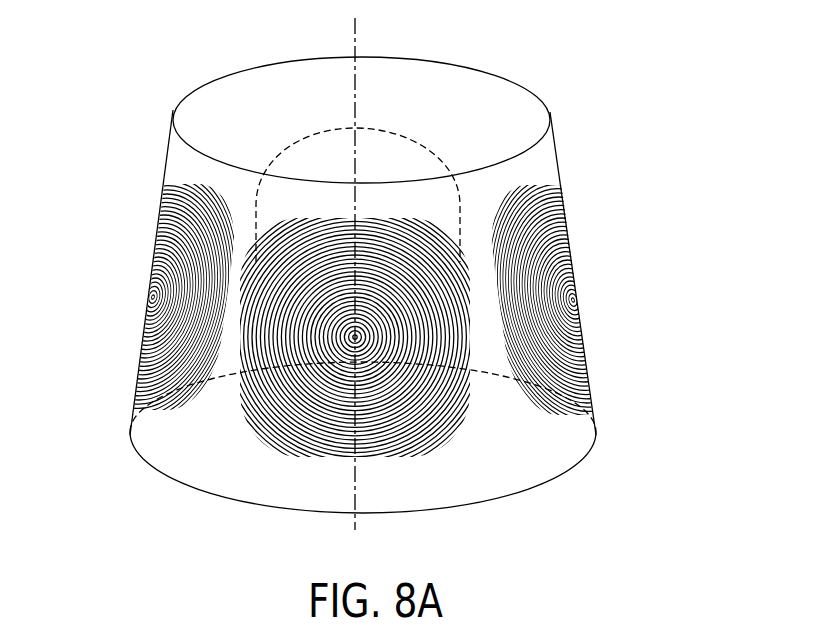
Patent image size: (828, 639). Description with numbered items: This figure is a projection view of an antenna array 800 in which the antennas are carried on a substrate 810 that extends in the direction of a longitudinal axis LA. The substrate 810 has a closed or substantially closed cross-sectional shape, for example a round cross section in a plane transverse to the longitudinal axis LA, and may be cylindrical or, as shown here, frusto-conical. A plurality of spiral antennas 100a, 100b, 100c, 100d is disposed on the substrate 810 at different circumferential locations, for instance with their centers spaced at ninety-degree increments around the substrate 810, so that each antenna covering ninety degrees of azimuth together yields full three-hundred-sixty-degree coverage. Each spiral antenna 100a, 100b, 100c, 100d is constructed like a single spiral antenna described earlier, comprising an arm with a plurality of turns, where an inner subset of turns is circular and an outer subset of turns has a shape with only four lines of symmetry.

The antenna array 800 is at (362, 285).
The substrate 810 is at (164, 182).
The spiral antenna 100a is at (383, 380).
The spiral antenna 100b is at (547, 307).
The spiral antenna 100c is at (163, 327).
The spiral antenna 100d is at (294, 132).
The longitudinal axis LA is at (366, 34).